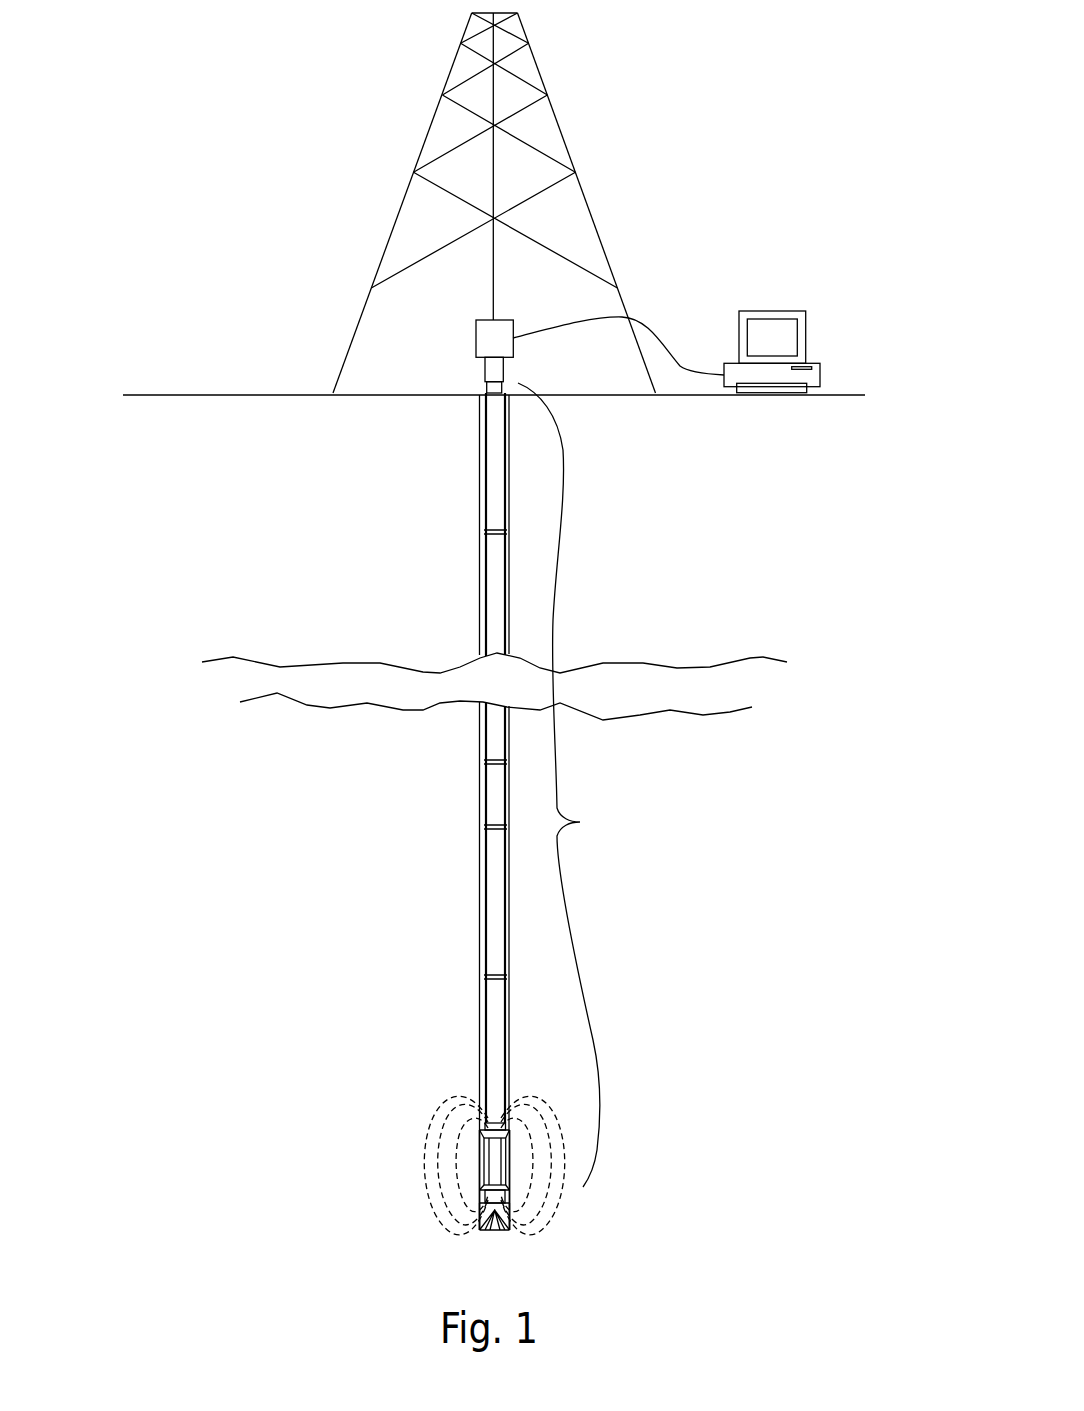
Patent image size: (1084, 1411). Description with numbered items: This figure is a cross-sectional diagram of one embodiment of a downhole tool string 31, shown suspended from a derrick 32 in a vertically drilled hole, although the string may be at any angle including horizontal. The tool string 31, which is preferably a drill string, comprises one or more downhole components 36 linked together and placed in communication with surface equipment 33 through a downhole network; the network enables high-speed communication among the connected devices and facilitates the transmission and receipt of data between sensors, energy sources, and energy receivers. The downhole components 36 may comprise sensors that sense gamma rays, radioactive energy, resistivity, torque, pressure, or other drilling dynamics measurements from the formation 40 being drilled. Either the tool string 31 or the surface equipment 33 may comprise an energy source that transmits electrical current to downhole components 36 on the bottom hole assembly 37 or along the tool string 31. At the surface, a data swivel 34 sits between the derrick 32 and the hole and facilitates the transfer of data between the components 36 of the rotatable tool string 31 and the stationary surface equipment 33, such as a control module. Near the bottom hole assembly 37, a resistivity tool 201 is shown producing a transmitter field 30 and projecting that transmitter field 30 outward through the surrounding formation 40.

The derrick 32 is at (590, 203).
The data swivel 34 is at (493, 338).
The surface equipment 33 is at (775, 335).
The downhole tool string 31 is at (580, 822).
The downhole component 36 is at (495, 795).
The resistivity tool 201 is at (485, 1120).
The bottom hole assembly 37 is at (486, 1212).
The transmitter field 30 is at (582, 1191).
The formation 40 is at (400, 1052).